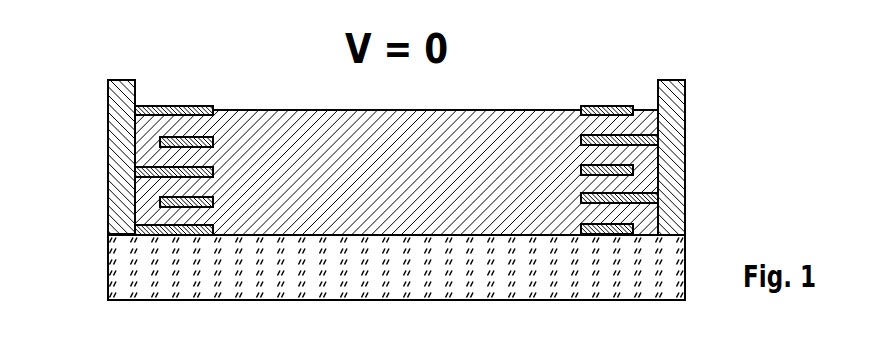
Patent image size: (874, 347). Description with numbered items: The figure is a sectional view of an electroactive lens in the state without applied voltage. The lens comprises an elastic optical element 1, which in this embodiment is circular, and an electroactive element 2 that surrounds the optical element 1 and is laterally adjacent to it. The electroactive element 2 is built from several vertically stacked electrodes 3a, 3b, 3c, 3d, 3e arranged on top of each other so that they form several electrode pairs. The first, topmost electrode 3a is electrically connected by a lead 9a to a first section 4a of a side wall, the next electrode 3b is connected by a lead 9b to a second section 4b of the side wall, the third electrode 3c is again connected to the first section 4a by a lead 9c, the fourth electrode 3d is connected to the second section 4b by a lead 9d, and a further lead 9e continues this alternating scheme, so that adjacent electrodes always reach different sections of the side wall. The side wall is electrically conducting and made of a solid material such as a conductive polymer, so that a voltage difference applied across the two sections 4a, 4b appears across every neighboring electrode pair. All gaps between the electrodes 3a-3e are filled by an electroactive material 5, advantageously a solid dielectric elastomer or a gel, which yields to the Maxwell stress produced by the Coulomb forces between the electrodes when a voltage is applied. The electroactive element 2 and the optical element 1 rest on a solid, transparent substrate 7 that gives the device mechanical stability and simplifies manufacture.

The optical element 1 is at (380, 179).
The electroactive element 2 is at (361, 63).
The first electrode 3a is at (172, 107).
The second electrode 3b is at (160, 140).
The third electrode 3c is at (172, 172).
The fourth electrode 3d is at (157, 210).
The fifth electrode 3e is at (177, 236).
The first section of side wall 4a is at (116, 133).
The second section of side wall 4b is at (679, 124).
The electroactive material 5 is at (188, 126).
The substrate 7 is at (358, 280).
The lead 9a is at (133, 81).
The lead 9b is at (663, 136).
The lead 9c is at (136, 172).
The lead 9d is at (658, 196).
The lead 9e is at (137, 237).